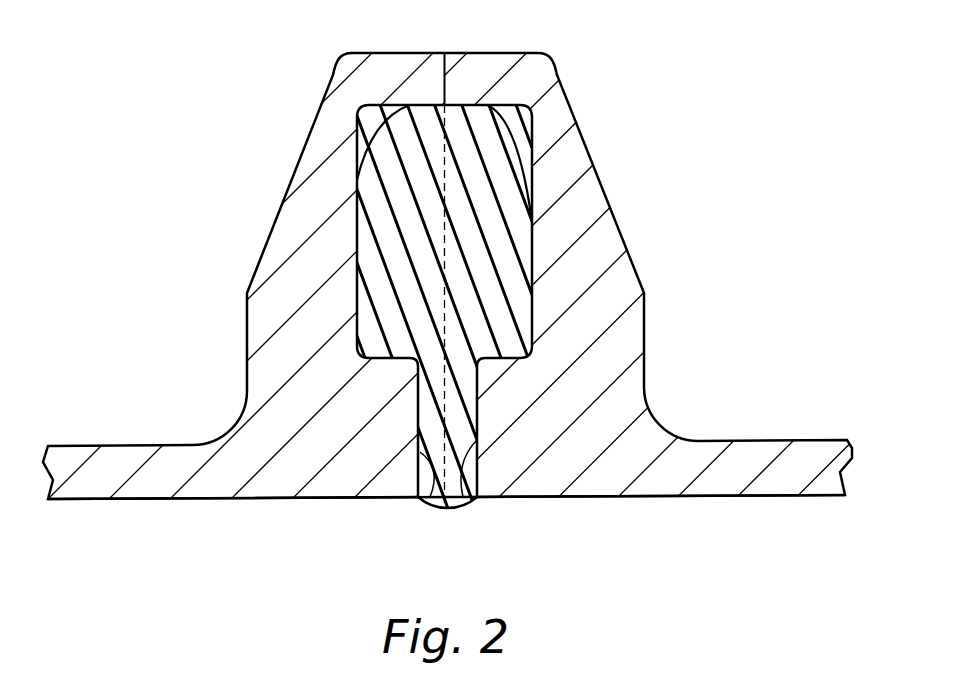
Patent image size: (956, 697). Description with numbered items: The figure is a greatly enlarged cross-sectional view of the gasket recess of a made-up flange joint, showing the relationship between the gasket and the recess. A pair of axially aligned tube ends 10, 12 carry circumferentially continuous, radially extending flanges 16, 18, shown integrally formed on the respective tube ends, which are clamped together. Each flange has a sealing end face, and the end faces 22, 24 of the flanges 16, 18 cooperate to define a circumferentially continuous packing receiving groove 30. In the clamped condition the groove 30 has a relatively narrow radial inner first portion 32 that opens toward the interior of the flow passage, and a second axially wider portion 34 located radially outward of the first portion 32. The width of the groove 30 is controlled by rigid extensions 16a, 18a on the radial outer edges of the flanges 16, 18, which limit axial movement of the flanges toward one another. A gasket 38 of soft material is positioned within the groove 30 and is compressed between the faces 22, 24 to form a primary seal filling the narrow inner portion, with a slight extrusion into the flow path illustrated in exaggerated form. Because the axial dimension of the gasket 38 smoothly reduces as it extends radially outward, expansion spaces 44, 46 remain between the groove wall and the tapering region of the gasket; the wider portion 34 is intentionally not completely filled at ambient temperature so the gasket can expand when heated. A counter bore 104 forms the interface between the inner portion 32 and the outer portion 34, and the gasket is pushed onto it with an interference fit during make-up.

The tube end 10 is at (118, 525).
The tube end 12 is at (784, 527).
The flange 16 is at (278, 252).
The rigid extension 16a is at (405, 67).
The flange 18 is at (593, 198).
The rigid extension 18a is at (483, 67).
The end face 22 is at (433, 508).
The end face 24 is at (467, 505).
The packing receiving groove 30 is at (396, 189).
The radial inner first portion 32 is at (459, 516).
The second axially wider portion 34 is at (380, 271).
The gasket 38 is at (480, 258).
The expansion space 44 is at (367, 128).
The expansion space 46 is at (522, 127).
The counter bore 104 is at (392, 362).